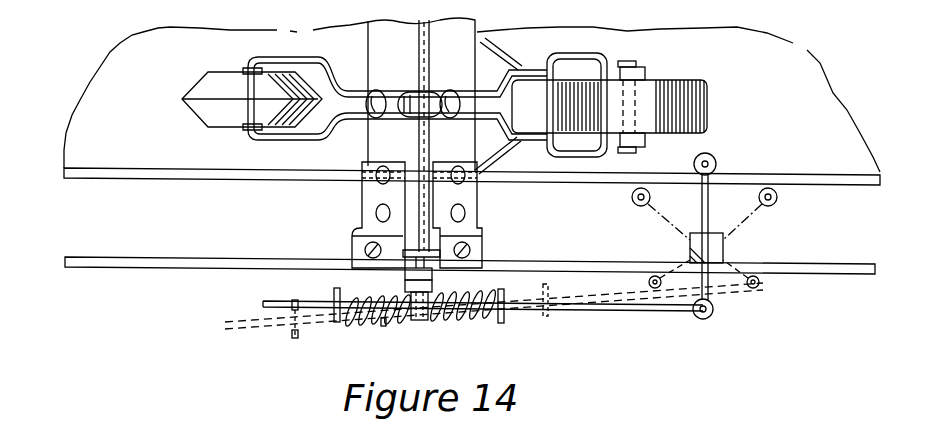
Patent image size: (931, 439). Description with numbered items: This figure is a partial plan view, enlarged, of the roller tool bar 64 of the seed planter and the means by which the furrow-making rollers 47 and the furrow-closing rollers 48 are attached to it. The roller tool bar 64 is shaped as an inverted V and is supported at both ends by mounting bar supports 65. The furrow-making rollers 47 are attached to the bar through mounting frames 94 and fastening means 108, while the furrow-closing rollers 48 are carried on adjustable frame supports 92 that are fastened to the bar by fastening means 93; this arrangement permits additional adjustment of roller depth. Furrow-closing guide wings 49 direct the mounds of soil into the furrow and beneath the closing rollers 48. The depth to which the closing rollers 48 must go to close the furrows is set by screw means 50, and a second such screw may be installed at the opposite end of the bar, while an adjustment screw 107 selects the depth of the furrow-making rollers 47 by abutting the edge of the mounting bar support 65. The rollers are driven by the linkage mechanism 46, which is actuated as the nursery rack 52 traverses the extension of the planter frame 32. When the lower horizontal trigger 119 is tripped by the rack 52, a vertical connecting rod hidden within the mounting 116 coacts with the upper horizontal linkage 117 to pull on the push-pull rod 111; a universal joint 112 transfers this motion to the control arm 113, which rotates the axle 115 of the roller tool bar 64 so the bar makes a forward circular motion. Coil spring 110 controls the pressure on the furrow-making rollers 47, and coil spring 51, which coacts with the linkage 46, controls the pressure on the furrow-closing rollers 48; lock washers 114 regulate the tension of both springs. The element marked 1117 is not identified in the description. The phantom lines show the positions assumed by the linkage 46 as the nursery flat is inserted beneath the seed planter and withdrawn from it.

The planter frame 32 is at (167, 268).
The linkage mechanism 46 is at (724, 240).
The furrow rollers 47 is at (206, 83).
The closing rollers 48 is at (708, 91).
The furrow-closing guide wings 49 is at (486, 52).
The screw means 50 is at (470, 249).
The coil spring 51 is at (478, 321).
The nursery rack 52 is at (171, 179).
The roller tool bar 64 is at (448, 30).
The mounting bar supports 65 is at (422, 228).
The adjustable frame supports 92 is at (428, 88).
The fastening means 93 is at (456, 117).
The mounting frames 94 is at (282, 58).
The adjustment screw 107 is at (370, 250).
The fastening means 108 is at (376, 89).
The coil spring 110 is at (358, 322).
The push-pull rod 111 is at (606, 316).
The universal joint 112 is at (418, 321).
The control arm 113 is at (432, 290).
The lock washers 114 is at (503, 323).
The axle 115 is at (406, 291).
The mounting 116 is at (690, 247).
The upper horizontal linkage 117 is at (710, 320).
The pin 1117 is at (296, 293).
The lower horizontal trigger 119 is at (715, 156).